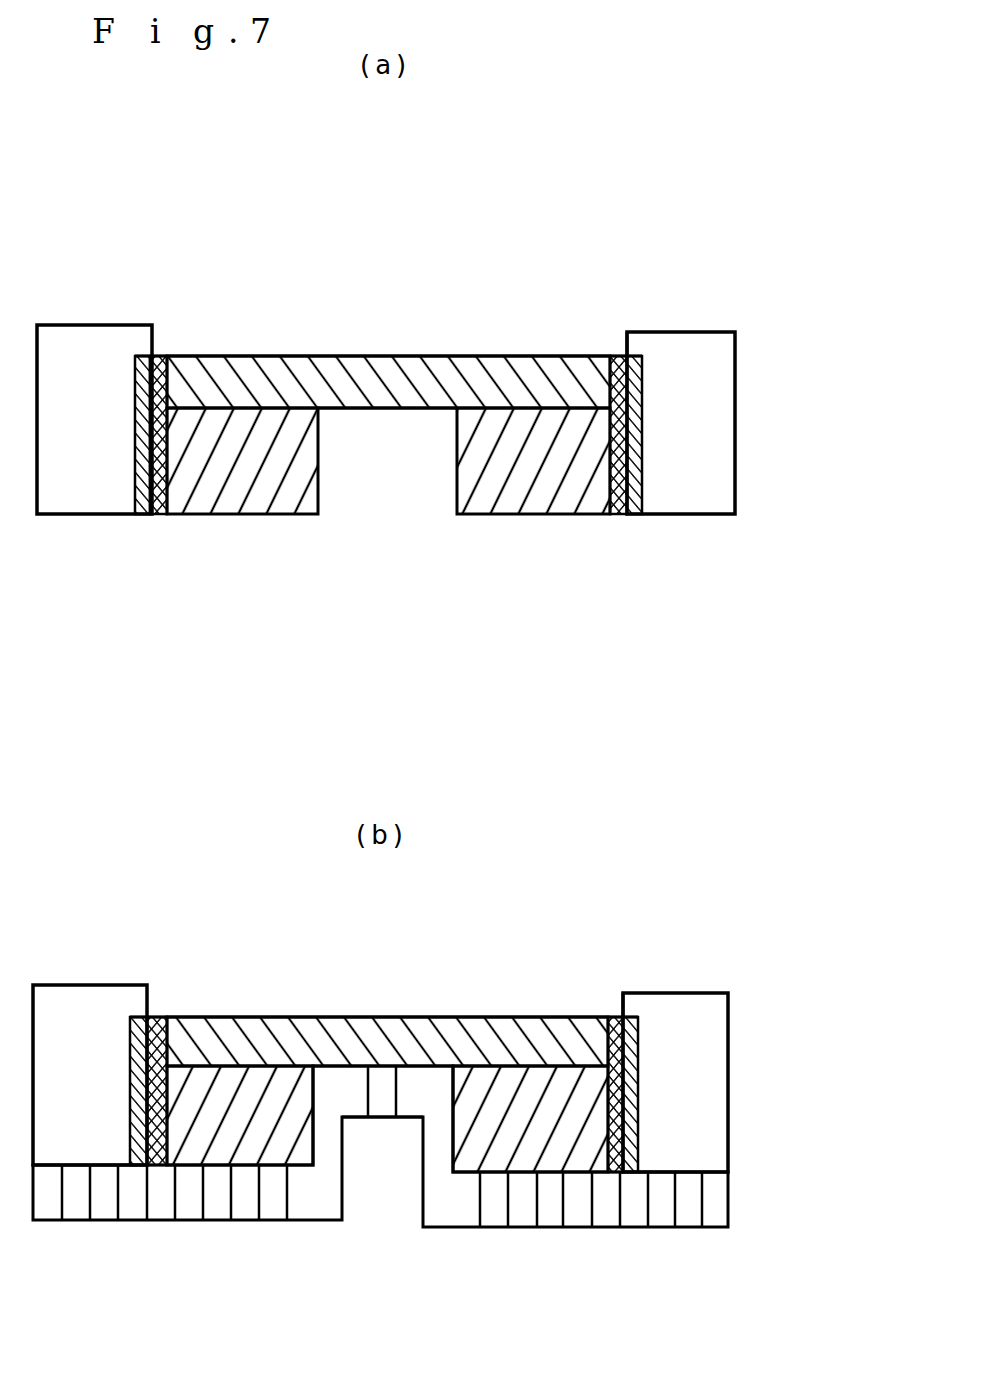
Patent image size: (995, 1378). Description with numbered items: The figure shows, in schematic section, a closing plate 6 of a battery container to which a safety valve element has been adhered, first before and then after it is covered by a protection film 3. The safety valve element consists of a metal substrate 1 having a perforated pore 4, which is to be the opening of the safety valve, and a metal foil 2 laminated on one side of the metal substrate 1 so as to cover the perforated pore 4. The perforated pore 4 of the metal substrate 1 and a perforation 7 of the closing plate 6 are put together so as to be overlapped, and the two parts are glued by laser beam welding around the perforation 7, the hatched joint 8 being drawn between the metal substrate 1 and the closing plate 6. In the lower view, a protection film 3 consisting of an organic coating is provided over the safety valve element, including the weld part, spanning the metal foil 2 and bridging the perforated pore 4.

In FIG. 7a, the ceramic base body 1 is at (580, 498).
In FIG. 7b, the ceramic base body 1 is at (598, 1133).
In FIG. 7a, the ceramic layer 2 is at (565, 376).
In FIG. 7b, the ceramic layer 2 is at (550, 1025).
In FIG. 7b, the support layer 3 is at (710, 1205).
In FIG. 7a, the opening 4 is at (418, 506).
In FIG. 7b, the opening 4 is at (375, 1199).
In FIG. 7a, the holding jig 6 is at (716, 413).
In FIG. 7b, the holding jig 6 is at (710, 1044).
In FIG. 7a, the gap 7 is at (603, 336).
In FIG. 7b, the gap 7 is at (597, 993).
In FIG. 7a, the adhesive layer 8 is at (642, 513).
In FIG. 7b, the adhesive layer 8 is at (640, 1021).